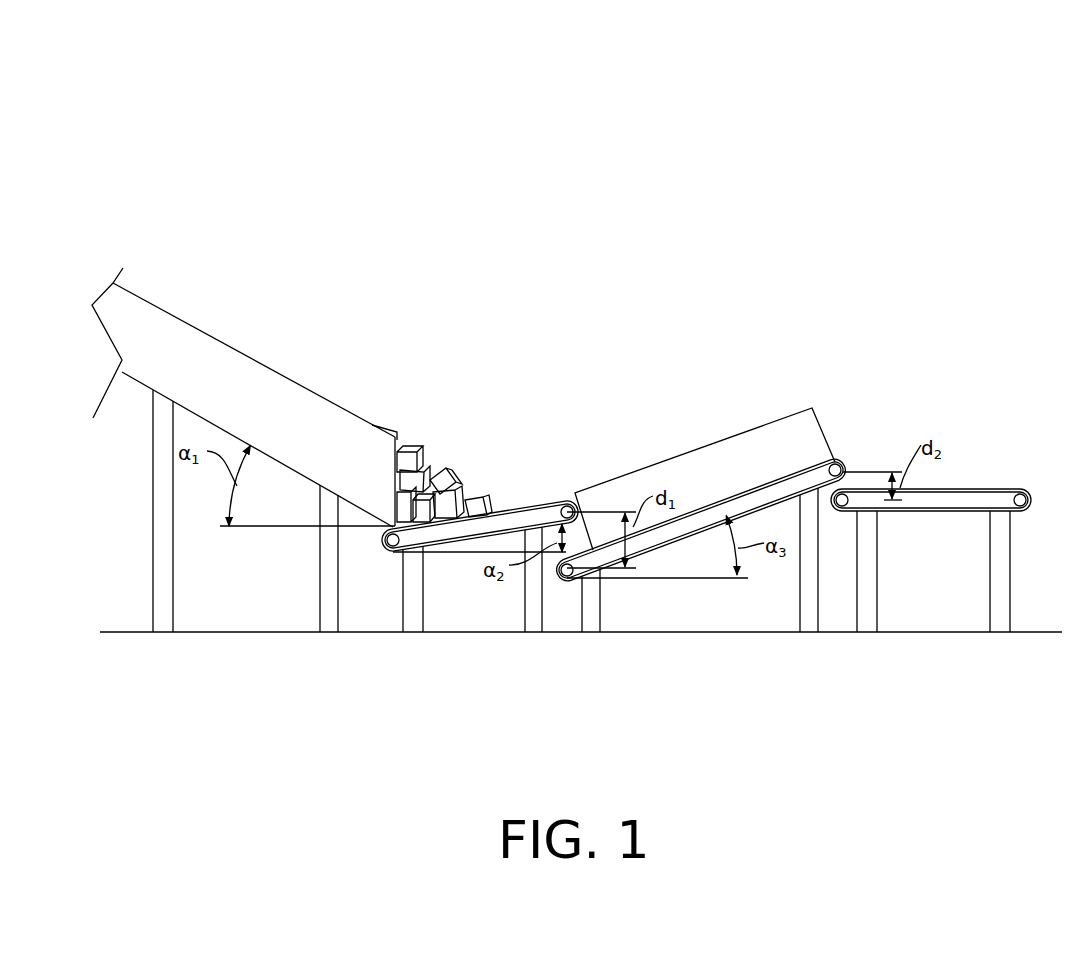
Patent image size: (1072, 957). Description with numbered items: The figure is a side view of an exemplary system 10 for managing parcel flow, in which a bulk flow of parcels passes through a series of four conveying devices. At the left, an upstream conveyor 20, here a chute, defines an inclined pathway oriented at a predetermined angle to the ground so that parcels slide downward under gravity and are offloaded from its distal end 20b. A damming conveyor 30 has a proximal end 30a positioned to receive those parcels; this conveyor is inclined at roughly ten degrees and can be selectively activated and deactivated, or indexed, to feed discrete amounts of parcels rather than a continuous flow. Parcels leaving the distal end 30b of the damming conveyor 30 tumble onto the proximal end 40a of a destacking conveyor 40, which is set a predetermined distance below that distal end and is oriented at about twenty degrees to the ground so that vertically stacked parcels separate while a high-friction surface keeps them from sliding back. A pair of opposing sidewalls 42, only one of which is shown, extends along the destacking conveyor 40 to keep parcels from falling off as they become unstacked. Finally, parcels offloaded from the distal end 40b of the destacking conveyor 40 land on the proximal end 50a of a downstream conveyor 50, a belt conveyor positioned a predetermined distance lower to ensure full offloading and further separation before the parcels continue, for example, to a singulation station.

The system for managing parcel flow 10 is at (64, 134).
The upstream conveyor 20 is at (277, 372).
The distal end of the upstream conveyor 20b is at (425, 450).
The damming conveyor 30 is at (513, 507).
The proximal end of the damming conveyor 30a is at (388, 551).
The distal end of the damming conveyor 30b is at (569, 504).
The destacking conveyor 40 is at (693, 508).
The proximal end of the destacking conveyor 40a is at (562, 580).
The distal end of the destacking conveyor 40b is at (843, 463).
The sidewall 42 is at (770, 421).
The downstream conveyor 50 is at (968, 489).
The proximal end of the downstream conveyor 50a is at (847, 512).